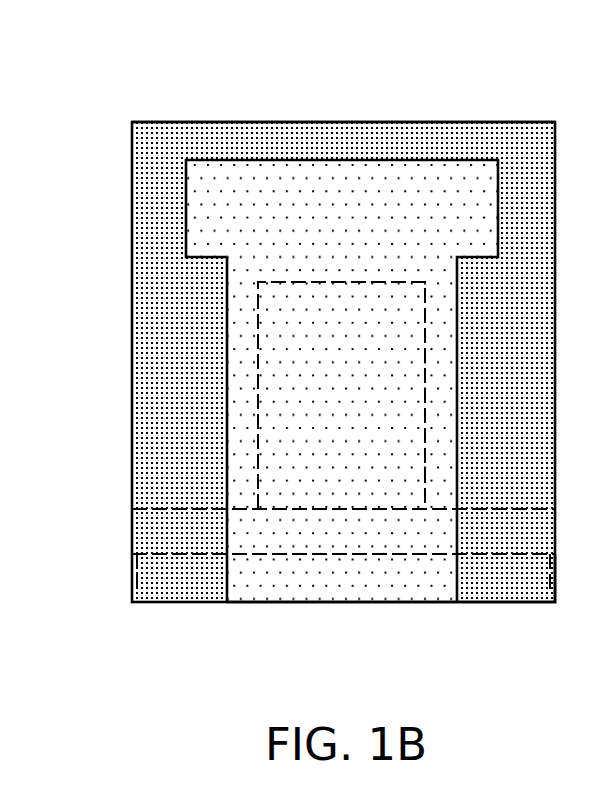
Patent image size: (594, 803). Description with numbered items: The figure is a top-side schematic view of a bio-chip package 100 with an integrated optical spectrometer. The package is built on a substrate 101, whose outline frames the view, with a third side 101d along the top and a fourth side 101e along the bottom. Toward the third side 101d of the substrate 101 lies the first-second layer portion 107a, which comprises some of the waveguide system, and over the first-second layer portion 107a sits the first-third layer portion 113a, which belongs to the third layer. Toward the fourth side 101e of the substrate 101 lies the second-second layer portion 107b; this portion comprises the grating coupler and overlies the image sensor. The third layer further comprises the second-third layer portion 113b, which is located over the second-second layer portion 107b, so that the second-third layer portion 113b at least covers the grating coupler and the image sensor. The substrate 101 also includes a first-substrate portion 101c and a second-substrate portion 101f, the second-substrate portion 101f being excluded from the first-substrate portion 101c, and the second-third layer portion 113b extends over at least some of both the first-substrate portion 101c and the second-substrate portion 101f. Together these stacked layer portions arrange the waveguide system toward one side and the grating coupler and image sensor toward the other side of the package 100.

The bio-chip package 100 is at (92, 111).
The substrate 101 is at (172, 446).
The first-substrate portion 101c is at (226, 345).
The third side of the substrate 101d is at (342, 122).
The fourth side of the substrate 101e is at (258, 603).
The second-substrate portion 101f is at (506, 583).
The first-second layer portion 107a is at (228, 208).
The second-second layer portion 107b is at (345, 578).
The first-third layer portion 113a is at (258, 397).
The second-third layer portion 113b is at (176, 557).